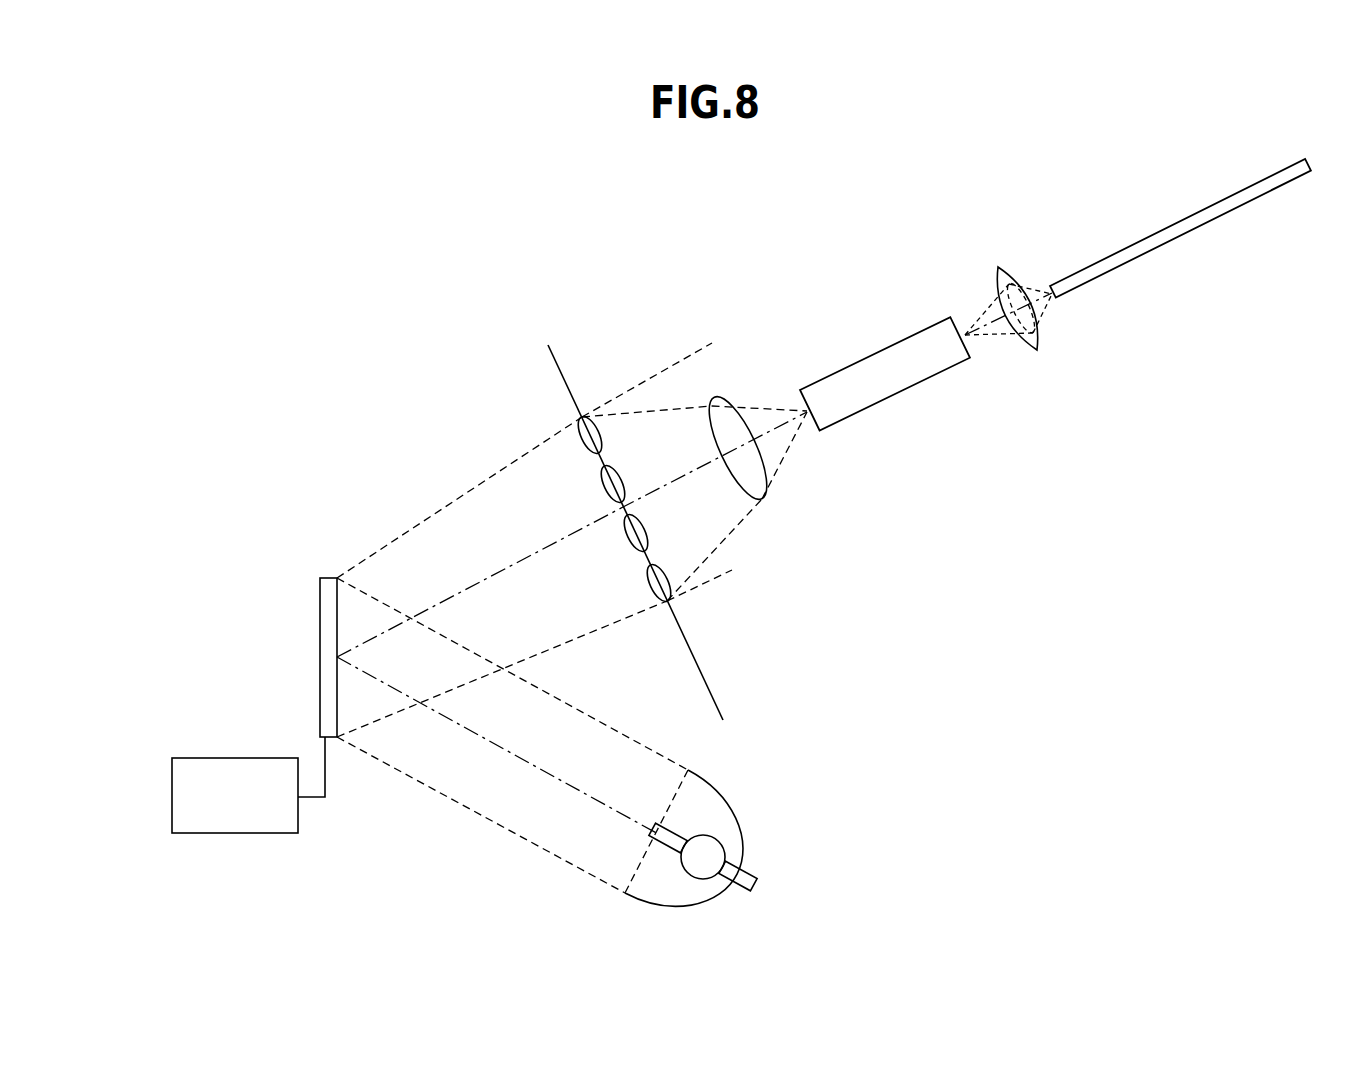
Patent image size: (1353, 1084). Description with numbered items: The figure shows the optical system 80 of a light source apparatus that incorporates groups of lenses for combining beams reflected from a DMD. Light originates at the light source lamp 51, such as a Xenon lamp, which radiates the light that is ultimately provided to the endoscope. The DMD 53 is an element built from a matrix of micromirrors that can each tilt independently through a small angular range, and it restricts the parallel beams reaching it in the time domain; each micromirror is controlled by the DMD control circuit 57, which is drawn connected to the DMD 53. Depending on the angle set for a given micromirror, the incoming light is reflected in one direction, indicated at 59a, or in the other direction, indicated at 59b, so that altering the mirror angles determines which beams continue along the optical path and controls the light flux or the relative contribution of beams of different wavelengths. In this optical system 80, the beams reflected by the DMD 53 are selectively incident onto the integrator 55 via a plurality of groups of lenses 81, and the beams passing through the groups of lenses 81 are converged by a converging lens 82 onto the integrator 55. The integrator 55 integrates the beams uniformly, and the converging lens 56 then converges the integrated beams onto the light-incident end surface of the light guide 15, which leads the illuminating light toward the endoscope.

The light guide 15 is at (1187, 218).
The light source lamp 51 is at (755, 882).
The DMD 53 is at (320, 688).
The integrator 55 is at (878, 352).
The converging lens 56 is at (998, 267).
The DMD control circuit 57 is at (172, 795).
The reflection direction 59a is at (723, 573).
The reflection direction 59b is at (652, 381).
The optical system 80 is at (746, 252).
The groups of lenses 81 is at (556, 414).
The converging lens 82 is at (738, 412).